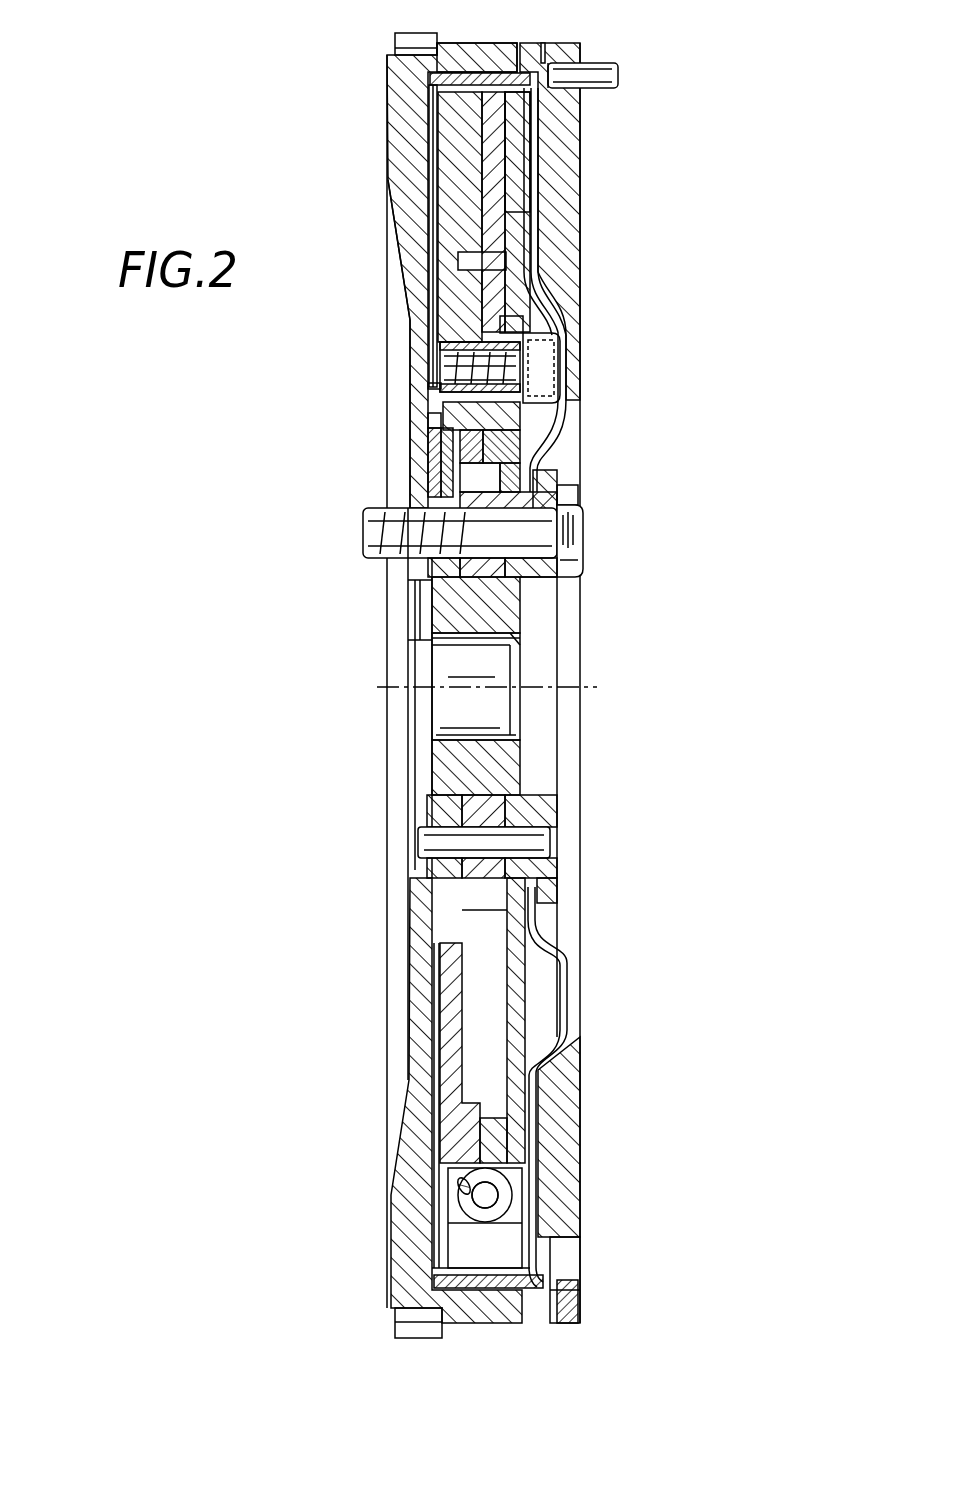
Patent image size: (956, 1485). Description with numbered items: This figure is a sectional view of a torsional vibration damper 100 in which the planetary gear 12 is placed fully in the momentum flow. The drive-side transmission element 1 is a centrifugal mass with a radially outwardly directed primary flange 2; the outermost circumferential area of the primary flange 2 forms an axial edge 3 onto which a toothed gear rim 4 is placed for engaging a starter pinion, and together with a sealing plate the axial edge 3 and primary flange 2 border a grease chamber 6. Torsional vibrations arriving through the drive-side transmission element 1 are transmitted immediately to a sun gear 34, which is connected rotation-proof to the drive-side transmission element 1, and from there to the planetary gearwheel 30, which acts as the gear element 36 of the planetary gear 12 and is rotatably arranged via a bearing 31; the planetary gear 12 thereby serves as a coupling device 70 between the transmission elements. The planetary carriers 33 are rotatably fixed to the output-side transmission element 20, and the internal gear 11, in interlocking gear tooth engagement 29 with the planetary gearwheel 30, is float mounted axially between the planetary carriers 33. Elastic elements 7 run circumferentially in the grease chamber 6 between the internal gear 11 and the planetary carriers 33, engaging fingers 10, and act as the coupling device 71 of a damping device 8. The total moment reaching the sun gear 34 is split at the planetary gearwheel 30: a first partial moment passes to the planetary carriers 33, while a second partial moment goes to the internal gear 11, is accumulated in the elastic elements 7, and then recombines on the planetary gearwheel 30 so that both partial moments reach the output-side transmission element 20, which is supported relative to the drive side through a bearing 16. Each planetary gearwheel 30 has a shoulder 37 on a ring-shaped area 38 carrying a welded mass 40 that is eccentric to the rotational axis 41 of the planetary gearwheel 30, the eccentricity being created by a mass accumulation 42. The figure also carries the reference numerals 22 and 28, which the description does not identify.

The torsional vibration damper 100 is at (265, 183).
The drive-side transmission element 1 is at (398, 243).
The primary flange 2 is at (396, 133).
The axial edge 3 is at (493, 52).
The toothed gear rim 4 is at (394, 42).
The grease chamber 6 is at (590, 128).
The elastic elements 7 is at (462, 1192).
The damping device 8 is at (488, 1222).
The fingers 10 is at (545, 118).
The internal gear 11 is at (540, 146).
The planetary gear 12 is at (562, 402).
The bearing 16 is at (494, 477).
The output-side transmission element 20 is at (587, 1133).
The fastening bolt 22 is at (580, 538).
The axis of rotation 28 is at (383, 685).
The interlocking gear tooth engagement 29 is at (513, 238).
The planetary gearwheel 30 is at (500, 282).
The bearing 31 is at (430, 326).
The planetary carrier 33 is at (520, 197).
The sun gear 34 is at (577, 503).
The gear element 36 is at (560, 365).
The shoulder 37 is at (432, 417).
The ring-shaped area 38 is at (430, 470).
The mass 40 is at (468, 290).
The rotational axis 41 is at (440, 362).
The mass accumulation 42 is at (431, 205).
The coupling device 70 is at (512, 322).
The coupling device 71 is at (433, 1180).